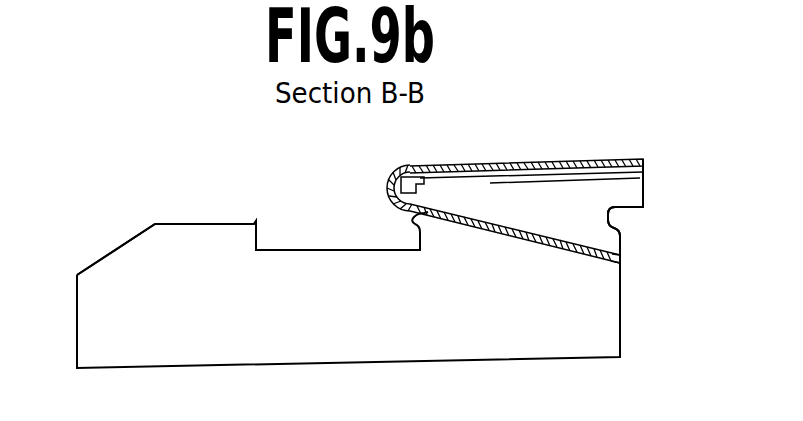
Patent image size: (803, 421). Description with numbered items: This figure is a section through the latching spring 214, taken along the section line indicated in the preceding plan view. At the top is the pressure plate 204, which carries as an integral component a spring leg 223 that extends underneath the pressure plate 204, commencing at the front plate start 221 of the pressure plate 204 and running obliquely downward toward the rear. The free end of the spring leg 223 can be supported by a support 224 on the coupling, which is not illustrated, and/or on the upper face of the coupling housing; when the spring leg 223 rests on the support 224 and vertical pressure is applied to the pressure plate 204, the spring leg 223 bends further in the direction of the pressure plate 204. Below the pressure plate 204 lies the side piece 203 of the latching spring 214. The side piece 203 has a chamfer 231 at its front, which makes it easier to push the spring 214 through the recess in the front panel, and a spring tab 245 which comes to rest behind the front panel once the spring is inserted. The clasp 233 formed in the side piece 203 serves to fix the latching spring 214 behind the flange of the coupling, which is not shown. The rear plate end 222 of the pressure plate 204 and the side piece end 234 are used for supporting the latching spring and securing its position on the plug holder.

The side piece 203 is at (118, 325).
The latching spring 214 is at (188, 182).
The chamfer 231 is at (114, 248).
The spring tab 245 is at (252, 222).
The clasp 233 is at (340, 248).
The front plate start 221 is at (388, 184).
The pressure plate 204 is at (514, 160).
The rear plate end 222 is at (647, 188).
The spring leg 223 is at (593, 247).
The support 224 is at (624, 262).
The side piece end 234 is at (620, 322).